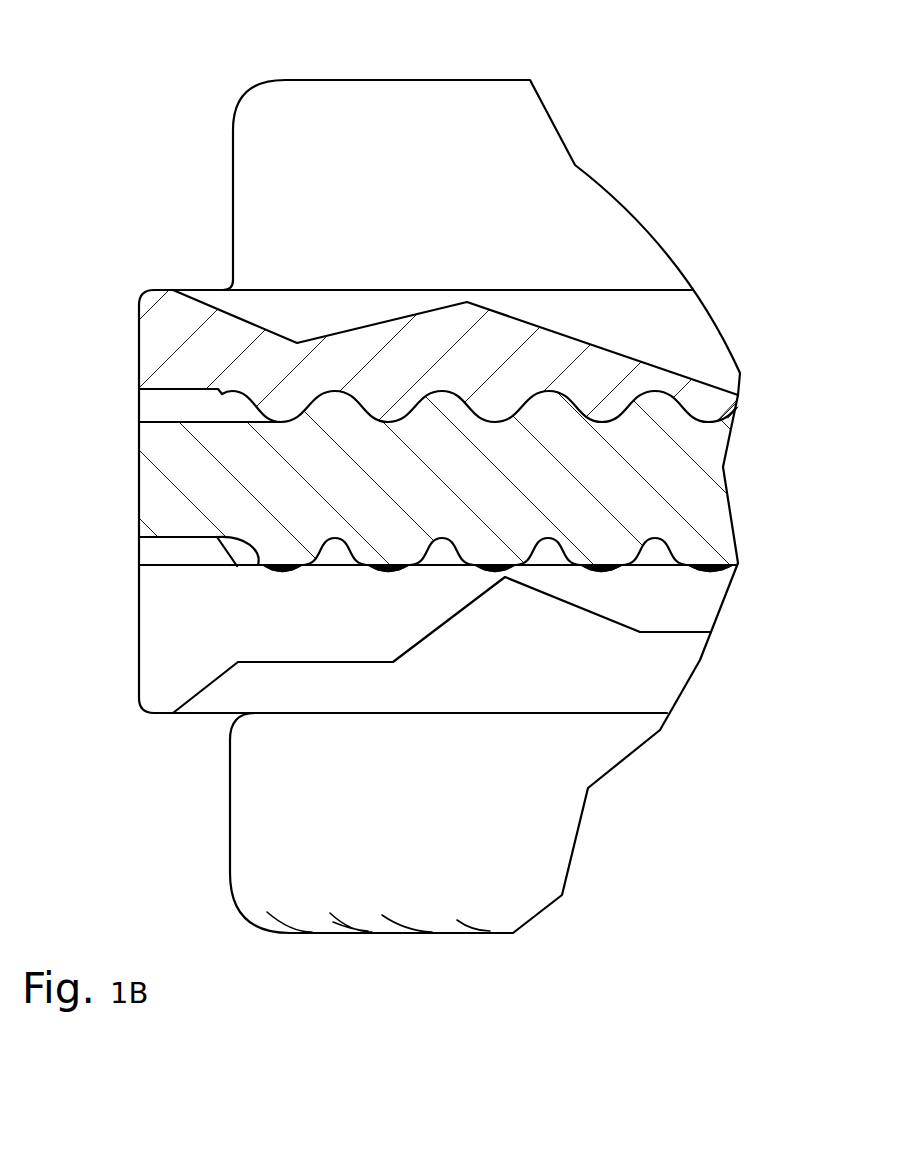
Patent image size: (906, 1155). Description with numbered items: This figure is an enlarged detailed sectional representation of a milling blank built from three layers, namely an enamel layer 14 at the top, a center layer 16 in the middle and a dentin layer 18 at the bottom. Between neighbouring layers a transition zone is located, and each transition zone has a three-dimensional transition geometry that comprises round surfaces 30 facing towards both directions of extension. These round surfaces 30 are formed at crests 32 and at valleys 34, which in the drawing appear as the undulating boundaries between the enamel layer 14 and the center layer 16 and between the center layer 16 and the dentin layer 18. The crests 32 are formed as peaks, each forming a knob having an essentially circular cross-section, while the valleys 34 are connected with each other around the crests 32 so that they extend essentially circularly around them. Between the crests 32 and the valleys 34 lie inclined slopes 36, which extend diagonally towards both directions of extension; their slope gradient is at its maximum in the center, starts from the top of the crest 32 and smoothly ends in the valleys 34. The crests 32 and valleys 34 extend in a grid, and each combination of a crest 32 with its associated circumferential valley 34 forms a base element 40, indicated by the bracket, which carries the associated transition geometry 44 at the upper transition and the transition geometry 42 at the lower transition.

The enamel layer 14 is at (373, 105).
The center layer 16 is at (255, 520).
The dentin layer 18 is at (667, 680).
The round surfaces 30 is at (562, 380).
The crests 32 is at (655, 392).
The valleys 34 is at (708, 417).
The inclined slopes 36 is at (677, 552).
The base element 40 is at (500, 589).
The transition geometry 42 is at (205, 557).
The transition geometry 44 is at (205, 433).